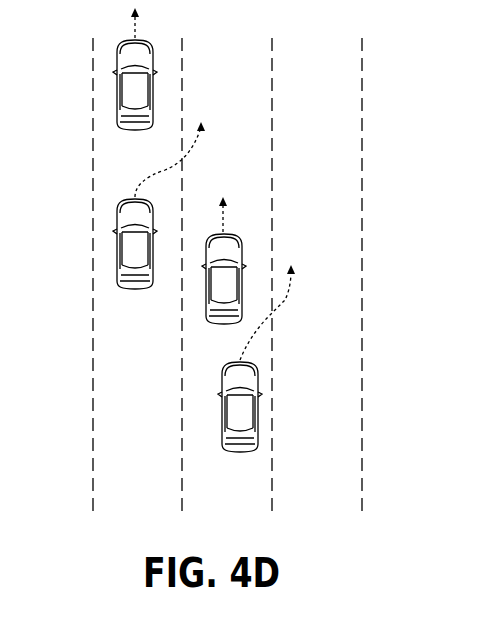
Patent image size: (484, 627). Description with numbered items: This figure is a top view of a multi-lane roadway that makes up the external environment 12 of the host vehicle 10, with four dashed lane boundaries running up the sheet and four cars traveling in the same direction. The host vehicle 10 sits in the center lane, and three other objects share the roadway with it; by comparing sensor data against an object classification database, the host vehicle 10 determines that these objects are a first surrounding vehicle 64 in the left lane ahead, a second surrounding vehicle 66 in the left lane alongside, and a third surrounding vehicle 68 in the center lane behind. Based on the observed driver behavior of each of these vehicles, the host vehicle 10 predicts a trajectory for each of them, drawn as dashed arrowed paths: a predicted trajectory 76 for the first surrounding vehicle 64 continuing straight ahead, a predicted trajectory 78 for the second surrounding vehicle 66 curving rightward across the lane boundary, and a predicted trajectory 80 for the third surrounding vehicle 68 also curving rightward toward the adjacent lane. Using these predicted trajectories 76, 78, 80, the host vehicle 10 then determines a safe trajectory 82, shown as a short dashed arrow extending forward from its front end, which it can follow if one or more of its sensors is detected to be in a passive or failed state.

The host vehicle 10 is at (204, 300).
The external environment 12 is at (316, 155).
The first surrounding vehicle 64 is at (116, 62).
The second surrounding vehicle 66 is at (114, 244).
The third surrounding vehicle 68 is at (262, 410).
The predicted trajectory of the first surrounding vehicle 76 is at (136, 32).
The predicted trajectory of the second surrounding vehicle 78 is at (165, 170).
The predicted trajectory of the third surrounding vehicle 80 is at (288, 295).
The safe trajectory 82 is at (224, 226).